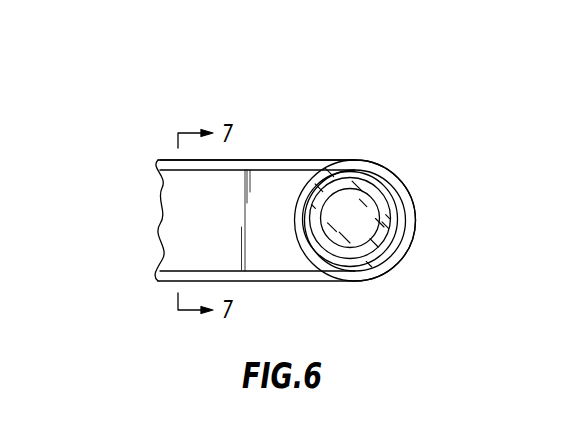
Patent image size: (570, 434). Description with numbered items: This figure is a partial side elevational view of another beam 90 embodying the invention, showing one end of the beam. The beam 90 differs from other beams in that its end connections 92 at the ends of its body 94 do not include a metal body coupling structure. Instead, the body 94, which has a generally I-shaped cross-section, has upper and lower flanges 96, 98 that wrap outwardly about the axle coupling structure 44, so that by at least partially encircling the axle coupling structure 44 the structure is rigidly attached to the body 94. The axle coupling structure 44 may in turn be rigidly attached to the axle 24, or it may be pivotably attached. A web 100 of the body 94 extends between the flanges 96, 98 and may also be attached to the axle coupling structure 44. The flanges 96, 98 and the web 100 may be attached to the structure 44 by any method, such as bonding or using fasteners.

The axle 24 is at (393, 254).
The axle coupling structure 44 is at (397, 191).
The beam 90 is at (372, 97).
The end connections 92 is at (317, 263).
The body 94 is at (302, 157).
The upper flange 96 is at (372, 162).
The lower flange 98 is at (368, 279).
The web 100 is at (187, 242).